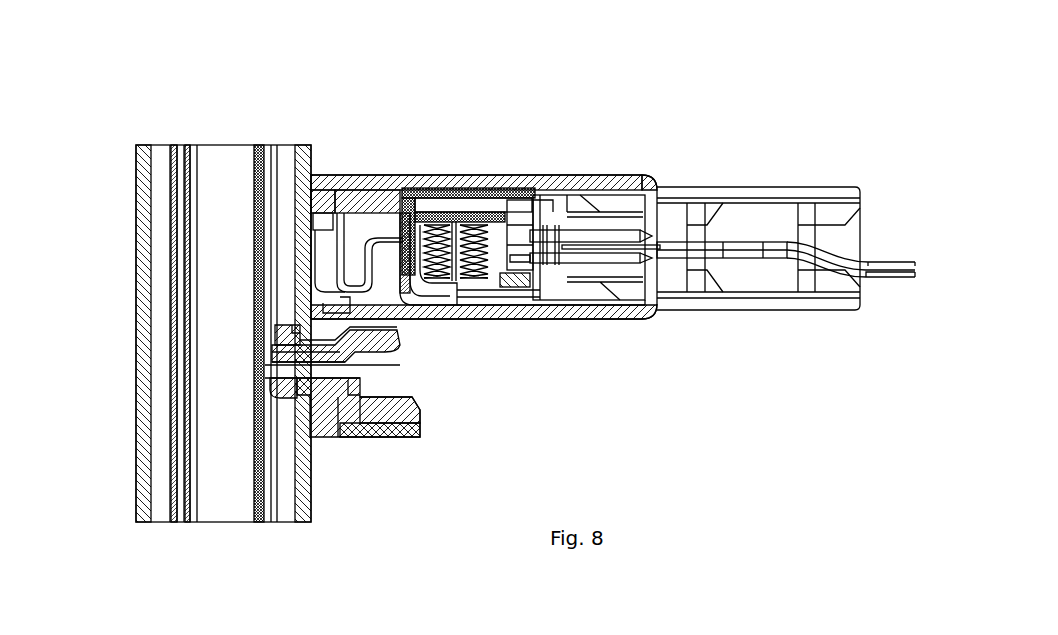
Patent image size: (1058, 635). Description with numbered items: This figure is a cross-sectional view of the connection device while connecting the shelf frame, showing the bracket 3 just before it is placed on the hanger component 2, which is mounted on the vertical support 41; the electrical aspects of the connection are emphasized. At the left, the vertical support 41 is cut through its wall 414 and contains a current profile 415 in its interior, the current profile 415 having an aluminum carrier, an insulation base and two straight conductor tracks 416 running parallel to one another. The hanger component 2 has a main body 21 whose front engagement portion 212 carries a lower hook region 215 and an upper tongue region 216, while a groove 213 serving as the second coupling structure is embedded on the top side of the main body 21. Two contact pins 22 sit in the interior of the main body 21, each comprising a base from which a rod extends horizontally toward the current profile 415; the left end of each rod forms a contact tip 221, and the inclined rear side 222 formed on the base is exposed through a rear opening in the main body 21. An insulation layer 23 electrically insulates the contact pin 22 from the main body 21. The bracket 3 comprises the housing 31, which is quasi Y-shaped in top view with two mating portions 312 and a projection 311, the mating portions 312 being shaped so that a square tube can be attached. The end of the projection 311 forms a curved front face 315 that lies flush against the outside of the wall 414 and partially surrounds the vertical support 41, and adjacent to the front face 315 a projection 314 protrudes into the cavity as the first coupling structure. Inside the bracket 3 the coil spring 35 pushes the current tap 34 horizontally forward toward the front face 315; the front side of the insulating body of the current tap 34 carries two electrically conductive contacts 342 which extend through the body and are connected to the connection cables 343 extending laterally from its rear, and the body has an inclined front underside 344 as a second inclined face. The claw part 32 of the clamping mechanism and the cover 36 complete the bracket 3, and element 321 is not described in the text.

The hanger component 2 is at (374, 457).
The main body 21 is at (397, 455).
The contact pins 22 is at (358, 400).
The insulation layer 23 is at (407, 421).
The engagement portion 212 is at (273, 350).
The groove 213 is at (323, 352).
The hook region 215 is at (287, 392).
The tongue region 216 is at (285, 325).
The contact tips 221 is at (267, 372).
The inclined rear side 222 is at (405, 423).
The bracket 3 is at (880, 183).
The housing 31 is at (447, 166).
The projection 311 is at (412, 180).
The mating portions 312 is at (690, 198).
The projection 314 is at (317, 222).
The front face 315 is at (310, 199).
The claw part 32 is at (381, 200).
The contact piece 321 is at (358, 268).
The current tap 34 is at (470, 178).
The contacts 342 is at (405, 250).
The connection cables 343 is at (748, 247).
The inclined front underside 344 is at (416, 240).
The coil spring 35 is at (474, 248).
The cover 36 is at (620, 335).
The vertical support 41 is at (142, 147).
The wall 414 is at (142, 168).
The current profile 415 is at (206, 147).
The conductor tracks 416 is at (265, 150).